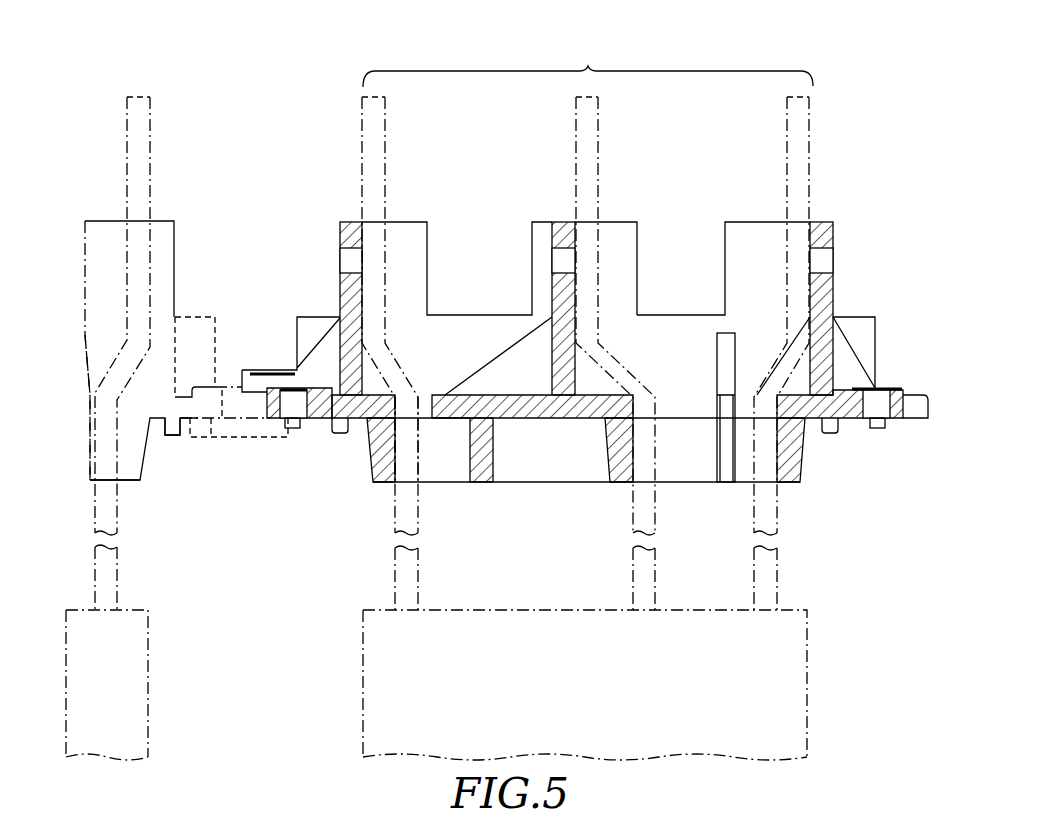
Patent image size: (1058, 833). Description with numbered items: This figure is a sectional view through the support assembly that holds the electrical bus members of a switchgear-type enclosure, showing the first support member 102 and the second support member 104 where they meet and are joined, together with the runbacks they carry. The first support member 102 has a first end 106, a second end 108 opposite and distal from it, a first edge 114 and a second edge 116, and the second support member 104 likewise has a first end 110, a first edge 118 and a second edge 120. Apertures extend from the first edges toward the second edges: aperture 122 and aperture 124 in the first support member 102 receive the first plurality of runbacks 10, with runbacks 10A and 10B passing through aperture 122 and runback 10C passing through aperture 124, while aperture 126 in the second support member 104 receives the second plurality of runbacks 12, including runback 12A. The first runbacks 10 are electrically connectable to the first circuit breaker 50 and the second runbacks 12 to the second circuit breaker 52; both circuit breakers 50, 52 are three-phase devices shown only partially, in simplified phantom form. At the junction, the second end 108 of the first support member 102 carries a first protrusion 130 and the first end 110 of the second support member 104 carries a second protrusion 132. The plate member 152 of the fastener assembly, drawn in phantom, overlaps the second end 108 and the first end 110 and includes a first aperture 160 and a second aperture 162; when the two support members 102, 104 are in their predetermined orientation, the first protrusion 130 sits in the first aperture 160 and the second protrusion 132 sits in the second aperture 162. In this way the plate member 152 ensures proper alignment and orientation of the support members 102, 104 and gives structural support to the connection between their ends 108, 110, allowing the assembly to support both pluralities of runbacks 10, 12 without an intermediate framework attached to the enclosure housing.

The first plurality of runbacks 10 is at (588, 61).
The runback 10A is at (810, 105).
The runback 10B is at (598, 108).
The runback 10C is at (362, 110).
The second plurality of runbacks 12 is at (130, 77).
The runback 12A is at (152, 103).
The first circuit breaker 50 is at (352, 653).
The second circuit breaker 52 is at (160, 653).
The first support member 102 is at (846, 195).
The second support member 104 is at (188, 228).
The first end 106 is at (885, 329).
The second end 108 is at (271, 357).
The first end 110 is at (208, 373).
The first edge 114 is at (487, 482).
The second edge 116 is at (612, 222).
The first edge 118 is at (128, 488).
The second edge 120 is at (108, 220).
The aperture 122 is at (684, 442).
The aperture 124 is at (425, 440).
The aperture 126 is at (81, 470).
The first protrusion 130 is at (290, 425).
The second protrusion 132 is at (222, 392).
The plate member 152 is at (193, 430).
The first aperture 160 is at (305, 445).
The second aperture 162 is at (215, 445).